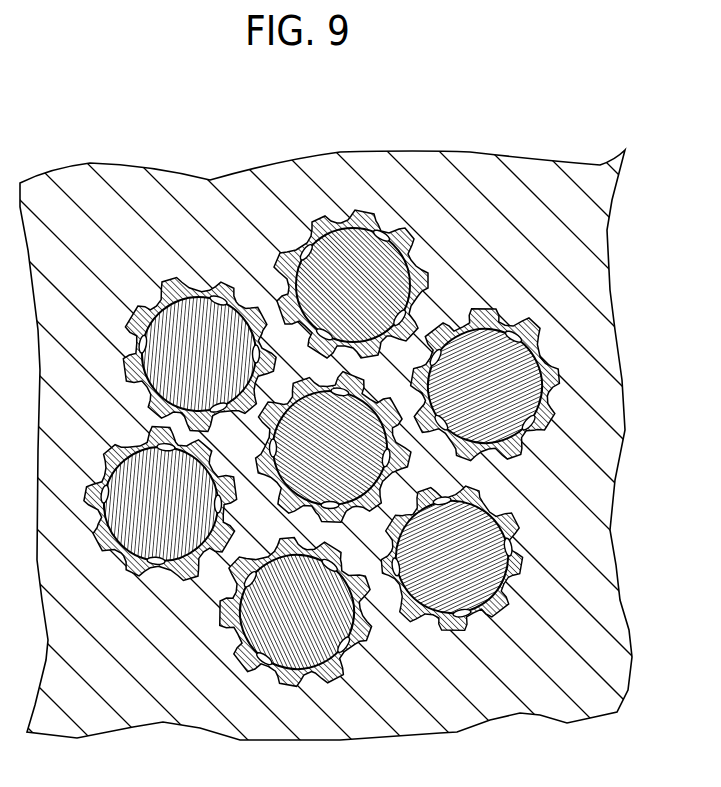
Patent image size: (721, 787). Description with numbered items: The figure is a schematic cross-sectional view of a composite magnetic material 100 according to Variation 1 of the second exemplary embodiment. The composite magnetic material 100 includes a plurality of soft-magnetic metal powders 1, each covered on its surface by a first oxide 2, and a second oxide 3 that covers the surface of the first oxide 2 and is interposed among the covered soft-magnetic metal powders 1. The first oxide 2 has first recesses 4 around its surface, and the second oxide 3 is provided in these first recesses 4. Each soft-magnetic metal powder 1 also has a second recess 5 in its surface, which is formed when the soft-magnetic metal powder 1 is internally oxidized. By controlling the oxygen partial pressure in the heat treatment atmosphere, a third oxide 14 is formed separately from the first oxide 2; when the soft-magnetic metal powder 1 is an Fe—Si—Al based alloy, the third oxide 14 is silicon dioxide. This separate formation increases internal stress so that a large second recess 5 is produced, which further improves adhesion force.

The composite magnetic material 100 is at (360, 423).
The soft-magnetic metal powder 1 is at (525, 577).
The first oxide 2 is at (530, 547).
The second oxide 3 is at (535, 470).
The first recess 4 is at (555, 377).
The second recess 5 is at (563, 373).
The third oxide 14 is at (543, 388).